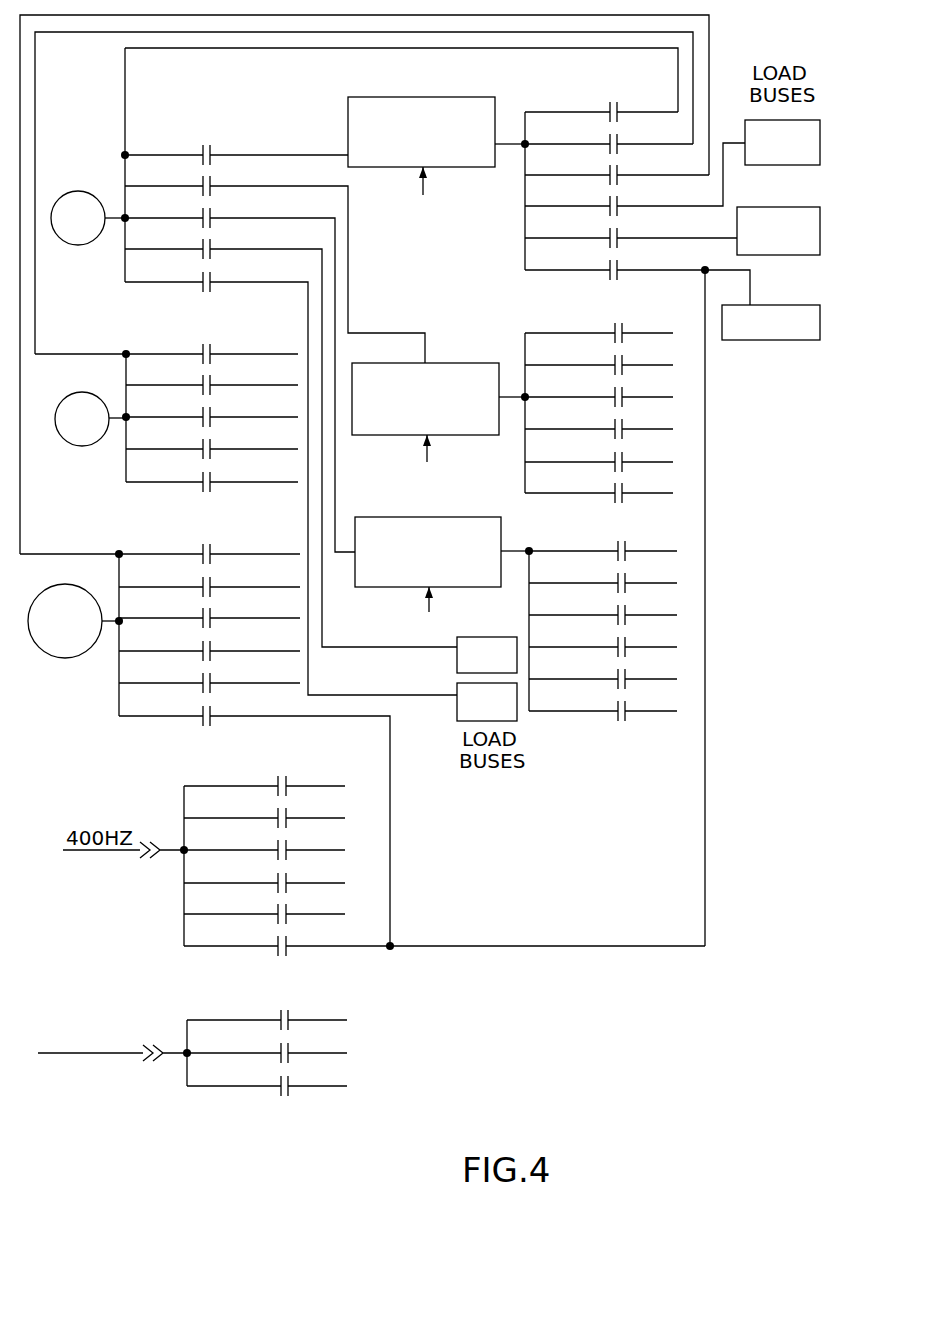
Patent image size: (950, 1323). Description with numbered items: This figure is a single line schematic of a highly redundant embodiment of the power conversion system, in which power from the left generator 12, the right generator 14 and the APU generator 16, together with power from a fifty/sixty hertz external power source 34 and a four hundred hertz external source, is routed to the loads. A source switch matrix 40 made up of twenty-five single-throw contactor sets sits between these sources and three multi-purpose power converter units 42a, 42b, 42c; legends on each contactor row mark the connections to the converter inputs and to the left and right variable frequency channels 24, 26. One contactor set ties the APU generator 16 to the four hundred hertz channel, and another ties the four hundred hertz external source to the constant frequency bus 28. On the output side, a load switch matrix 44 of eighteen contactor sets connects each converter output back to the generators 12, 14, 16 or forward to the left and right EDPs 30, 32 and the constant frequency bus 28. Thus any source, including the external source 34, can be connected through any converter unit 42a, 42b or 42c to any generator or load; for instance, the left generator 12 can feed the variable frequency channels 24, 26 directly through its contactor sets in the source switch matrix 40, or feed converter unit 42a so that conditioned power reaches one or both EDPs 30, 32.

The left generator 12 is at (58, 198).
The right generator 14 is at (65, 446).
The APU generator 16 is at (52, 658).
The left variable frequency channel 24 is at (457, 670).
The right variable frequency channel 26 is at (457, 708).
The 400 Hz constant frequency bus 28 is at (745, 342).
The left electrically driven hydraulic pump (EDP) 30 is at (758, 167).
The right electrically driven hydraulic pump (EDP) 32 is at (762, 257).
The 50/60 Hz external power input 34 is at (104, 1076).
The source switch matrix 40 is at (268, 1078).
The multi-purpose converter unit 42a is at (455, 97).
The multi-purpose converter unit 42b is at (445, 363).
The multi-purpose converter unit 42c is at (450, 517).
The load switch matrix 44 is at (612, 661).